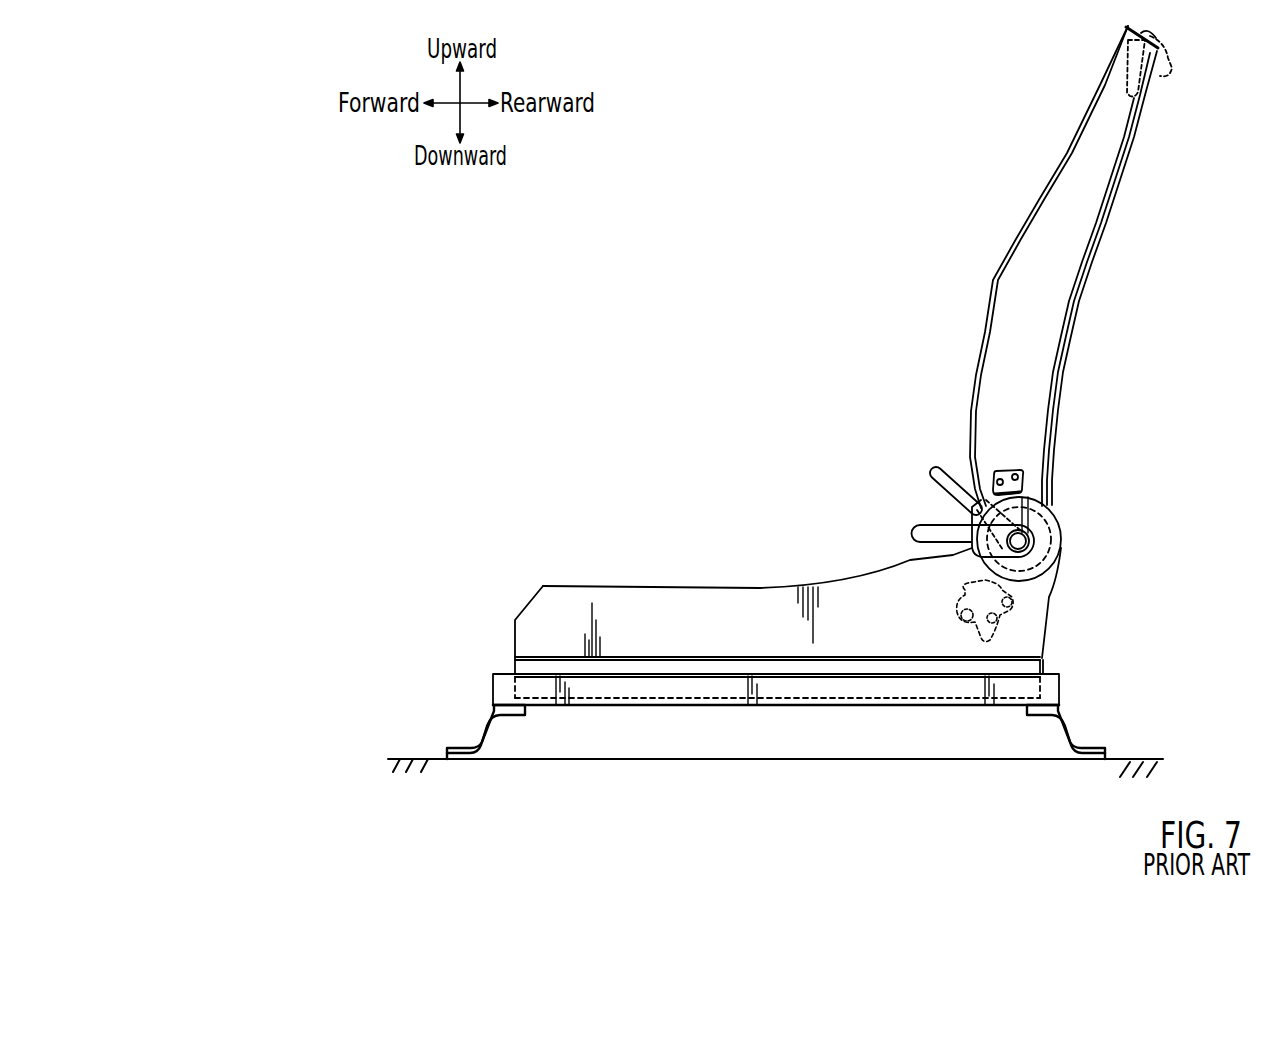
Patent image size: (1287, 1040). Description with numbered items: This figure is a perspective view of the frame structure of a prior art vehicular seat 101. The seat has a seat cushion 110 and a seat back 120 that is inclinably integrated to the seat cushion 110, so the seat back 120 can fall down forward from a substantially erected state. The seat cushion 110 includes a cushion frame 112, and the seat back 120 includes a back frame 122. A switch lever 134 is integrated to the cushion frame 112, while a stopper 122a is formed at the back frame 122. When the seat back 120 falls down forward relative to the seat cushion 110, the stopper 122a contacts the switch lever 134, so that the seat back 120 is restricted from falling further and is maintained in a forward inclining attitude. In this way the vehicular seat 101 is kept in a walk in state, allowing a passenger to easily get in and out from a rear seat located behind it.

The vehicular seat 101 is at (728, 367).
The seat cushion 110 is at (770, 528).
The cushion frame 112 is at (722, 607).
The seat back 120 is at (1007, 180).
The back frame 122 is at (1037, 270).
The stopper 122a is at (973, 513).
The switch lever 134 is at (1013, 613).